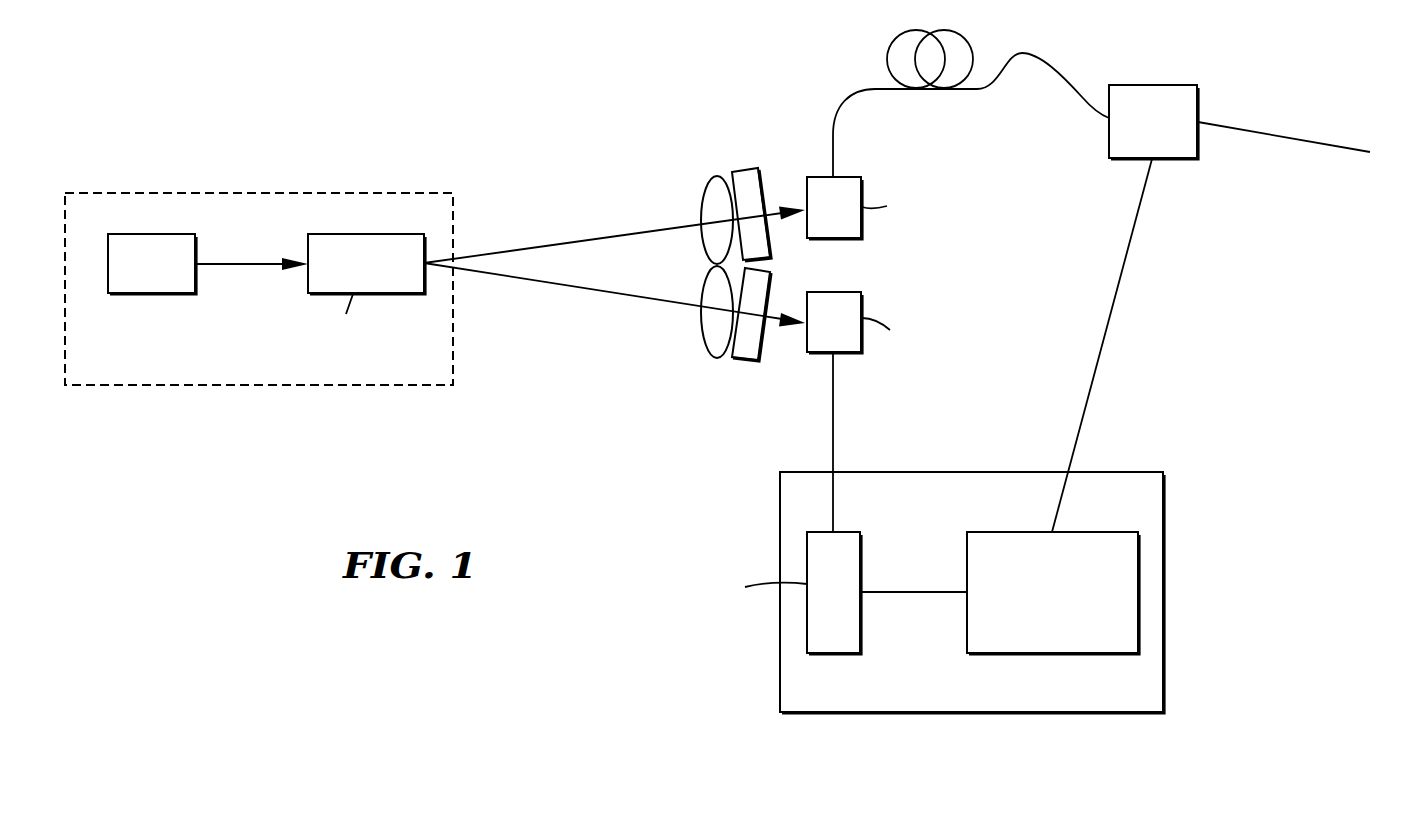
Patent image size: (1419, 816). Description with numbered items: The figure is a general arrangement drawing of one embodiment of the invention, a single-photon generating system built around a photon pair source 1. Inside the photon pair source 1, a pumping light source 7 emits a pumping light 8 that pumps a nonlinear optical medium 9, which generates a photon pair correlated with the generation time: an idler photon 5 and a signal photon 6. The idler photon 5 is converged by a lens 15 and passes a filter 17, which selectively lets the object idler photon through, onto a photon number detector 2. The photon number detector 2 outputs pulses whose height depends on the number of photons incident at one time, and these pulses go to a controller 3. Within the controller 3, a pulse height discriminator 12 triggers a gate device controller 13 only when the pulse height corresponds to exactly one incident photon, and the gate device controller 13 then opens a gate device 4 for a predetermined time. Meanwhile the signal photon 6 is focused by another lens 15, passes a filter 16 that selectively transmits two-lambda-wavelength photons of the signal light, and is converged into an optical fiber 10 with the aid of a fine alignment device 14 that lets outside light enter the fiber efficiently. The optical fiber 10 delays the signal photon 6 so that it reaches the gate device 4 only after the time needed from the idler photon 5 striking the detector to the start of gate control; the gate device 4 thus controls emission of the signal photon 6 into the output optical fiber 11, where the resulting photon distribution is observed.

The photon pair source 1 is at (204, 193).
The photon number detector 2 is at (841, 331).
The controller 3 is at (780, 673).
The gate device 4 is at (1152, 86).
The idler photon 5 is at (509, 282).
The signal photon 6 is at (521, 247).
The pumping light source 7 is at (150, 294).
The pumping light 8 is at (237, 263).
The nonlinear optical medium 9 is at (370, 275).
The optical fiber 10 is at (1033, 53).
The optical fiber 11 is at (1250, 131).
The pulse height discriminator 12 is at (843, 597).
The gate device controller 13 is at (995, 537).
The fine alignment device 14 is at (844, 218).
The lens 15 is at (704, 197).
The filter 16 is at (749, 171).
The filter 17 is at (742, 360).